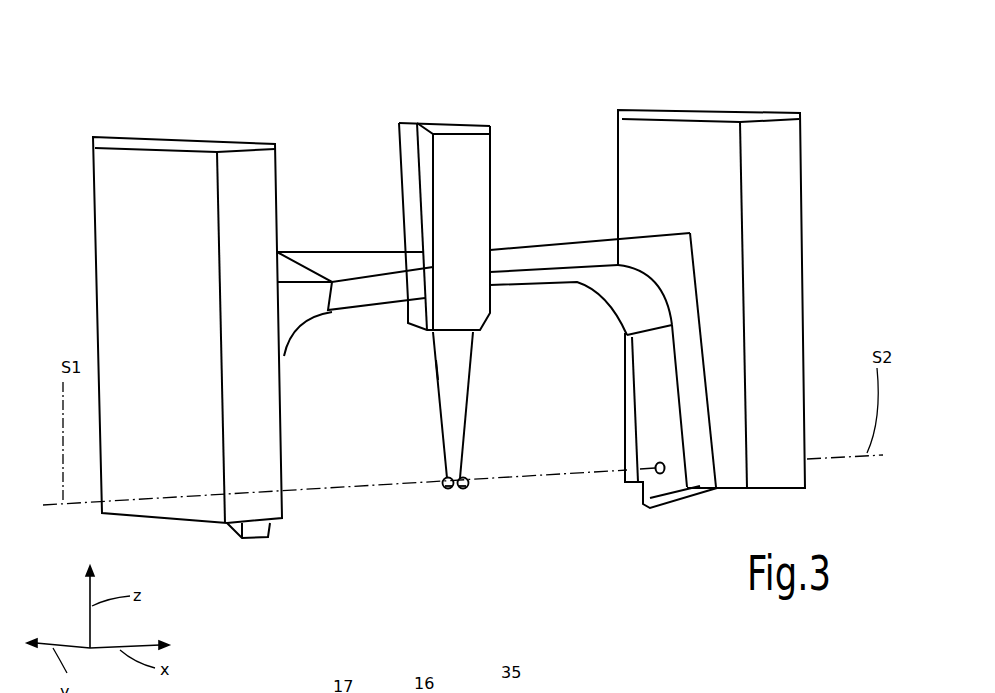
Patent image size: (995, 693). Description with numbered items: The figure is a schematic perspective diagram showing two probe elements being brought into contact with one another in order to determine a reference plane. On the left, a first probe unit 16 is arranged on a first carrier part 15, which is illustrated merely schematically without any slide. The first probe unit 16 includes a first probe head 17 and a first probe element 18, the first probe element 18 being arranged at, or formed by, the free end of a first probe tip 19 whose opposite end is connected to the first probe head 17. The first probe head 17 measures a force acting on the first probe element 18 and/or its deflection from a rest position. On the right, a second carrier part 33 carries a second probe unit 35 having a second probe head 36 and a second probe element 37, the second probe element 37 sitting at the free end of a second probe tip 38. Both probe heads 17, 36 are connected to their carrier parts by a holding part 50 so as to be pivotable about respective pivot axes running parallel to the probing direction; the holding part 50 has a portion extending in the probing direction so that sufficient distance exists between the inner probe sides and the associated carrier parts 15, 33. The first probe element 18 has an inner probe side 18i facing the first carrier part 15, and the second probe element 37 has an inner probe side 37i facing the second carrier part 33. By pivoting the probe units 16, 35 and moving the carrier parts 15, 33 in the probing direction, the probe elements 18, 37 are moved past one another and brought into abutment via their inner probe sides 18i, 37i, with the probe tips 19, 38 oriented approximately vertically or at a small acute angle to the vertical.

The first carrier part 15 is at (125, 132).
The first probe unit 16 is at (339, 153).
The first probe head 17 is at (427, 203).
The first probe element 18 is at (465, 490).
The first probe tip 19 is at (478, 363).
The second carrier part 33 is at (720, 103).
The second probe unit 35 is at (577, 116).
The second probe head 36 is at (405, 123).
The second probe element 37 is at (446, 489).
The second probe tip 38 is at (435, 360).
The holding part 50 is at (322, 260).
The inner probe side 37i is at (459, 491).
The inner probe side 18i is at (472, 548).